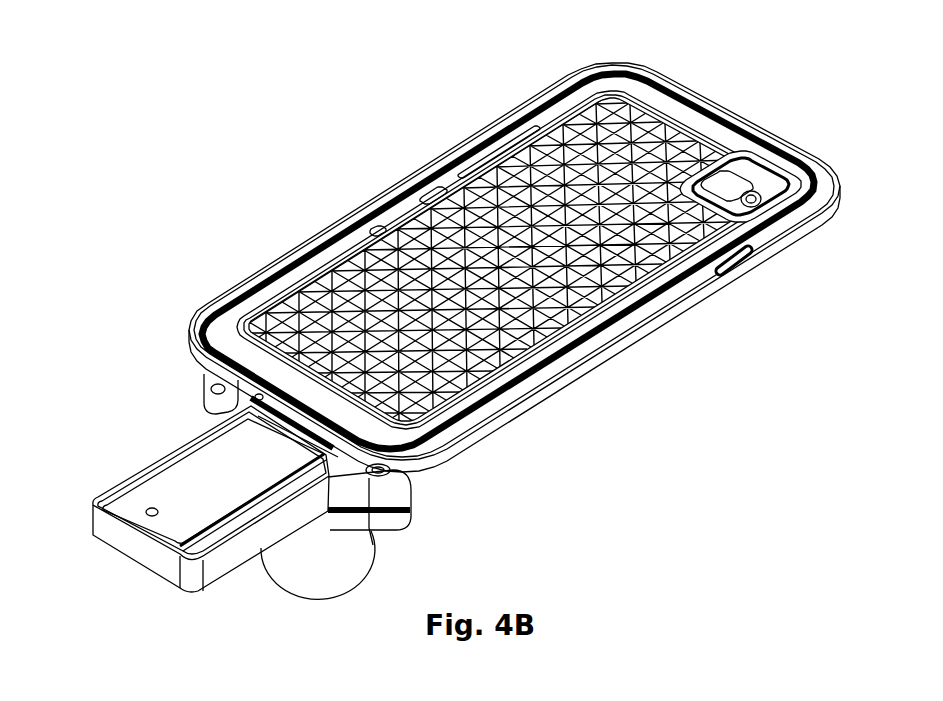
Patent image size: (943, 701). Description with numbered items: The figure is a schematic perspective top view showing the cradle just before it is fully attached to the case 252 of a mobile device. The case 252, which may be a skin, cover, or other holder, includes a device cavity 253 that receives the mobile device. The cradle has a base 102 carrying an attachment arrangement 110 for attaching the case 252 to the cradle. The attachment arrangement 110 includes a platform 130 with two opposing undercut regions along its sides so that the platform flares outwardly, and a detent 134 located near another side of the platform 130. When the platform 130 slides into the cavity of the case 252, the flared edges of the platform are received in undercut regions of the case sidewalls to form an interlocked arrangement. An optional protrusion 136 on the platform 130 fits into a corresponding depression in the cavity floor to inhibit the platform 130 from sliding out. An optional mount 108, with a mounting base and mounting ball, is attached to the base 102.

The case 252 is at (477, 137).
The device cavity 253 is at (675, 127).
The detent 134 is at (247, 389).
The attachment arrangement 110 is at (167, 468).
The platform 130 is at (127, 490).
The protrusion 136 is at (138, 511).
The base 102 is at (142, 553).
The mount 108 is at (363, 545).